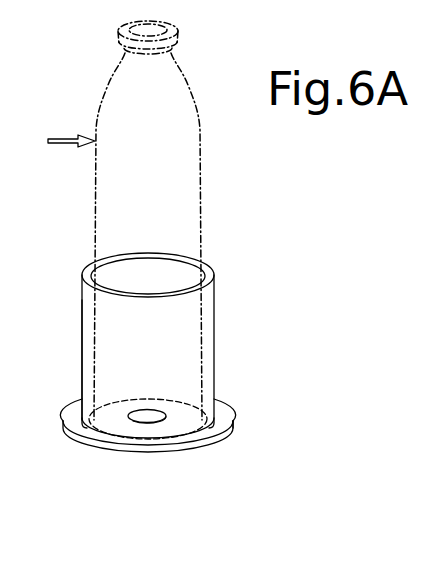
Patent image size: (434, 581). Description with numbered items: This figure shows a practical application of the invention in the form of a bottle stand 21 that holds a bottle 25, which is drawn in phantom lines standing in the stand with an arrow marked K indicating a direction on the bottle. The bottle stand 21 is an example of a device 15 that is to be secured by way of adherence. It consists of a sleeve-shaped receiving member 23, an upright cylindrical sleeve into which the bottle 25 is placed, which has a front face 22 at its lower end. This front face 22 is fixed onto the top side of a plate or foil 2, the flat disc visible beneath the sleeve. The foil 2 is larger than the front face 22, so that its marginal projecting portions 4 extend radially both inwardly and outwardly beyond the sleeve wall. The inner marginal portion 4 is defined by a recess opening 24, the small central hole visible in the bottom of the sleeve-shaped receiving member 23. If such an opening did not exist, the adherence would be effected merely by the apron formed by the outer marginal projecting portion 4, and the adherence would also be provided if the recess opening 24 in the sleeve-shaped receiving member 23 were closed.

The bottle 25 is at (93, 203).
The viewing direction arrow K is at (71, 128).
The device 15 is at (246, 377).
The bottle stand 21 is at (213, 318).
The sleeve-shaped receiving member 23 is at (82, 320).
The plate or foil 2 is at (118, 453).
The marginal projecting portion 4 is at (120, 421).
The recess opening 24 is at (165, 420).
The front face 22 is at (207, 444).